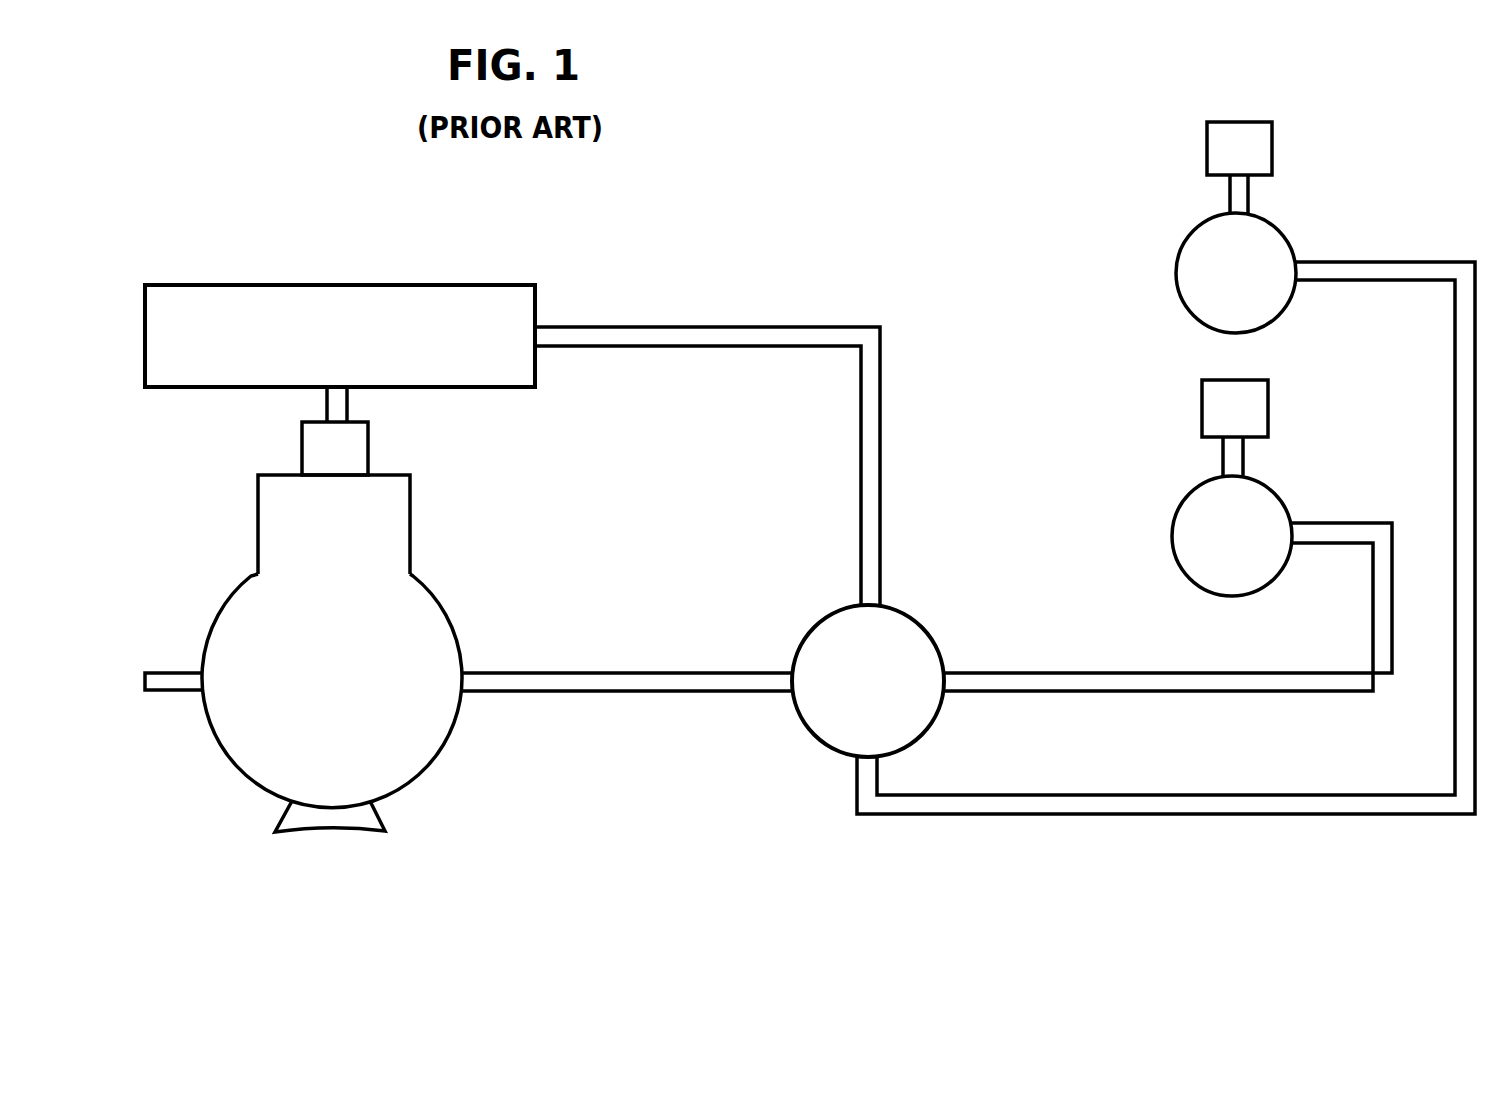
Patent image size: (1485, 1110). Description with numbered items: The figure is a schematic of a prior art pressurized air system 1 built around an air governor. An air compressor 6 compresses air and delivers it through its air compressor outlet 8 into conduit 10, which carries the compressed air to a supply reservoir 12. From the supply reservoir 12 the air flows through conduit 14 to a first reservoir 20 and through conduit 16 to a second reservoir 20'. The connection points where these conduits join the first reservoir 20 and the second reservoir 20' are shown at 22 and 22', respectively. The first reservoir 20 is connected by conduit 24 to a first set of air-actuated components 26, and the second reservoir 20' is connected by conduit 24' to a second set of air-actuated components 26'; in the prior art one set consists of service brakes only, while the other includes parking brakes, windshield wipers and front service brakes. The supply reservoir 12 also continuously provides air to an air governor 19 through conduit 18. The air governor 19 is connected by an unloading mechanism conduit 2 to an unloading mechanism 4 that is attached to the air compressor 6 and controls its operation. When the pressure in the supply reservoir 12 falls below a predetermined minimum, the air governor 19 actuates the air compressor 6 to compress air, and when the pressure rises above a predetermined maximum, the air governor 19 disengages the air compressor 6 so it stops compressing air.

The pressurized air system 1 is at (212, 200).
The unloading mechanism conduit 2 is at (323, 398).
The unloading mechanism 4 is at (302, 442).
The air compressor 6 is at (218, 617).
The air compressor outlet 8 is at (464, 670).
The conduit 10 is at (621, 671).
The supply reservoir 12 is at (801, 728).
The conduit 14 is at (1022, 817).
The conduit 16 is at (1042, 671).
The conduit 18 is at (758, 326).
The air governor 19 is at (407, 284).
The first reservoir 20 is at (1191, 273).
The first reservoir inlet port 22 is at (1332, 235).
The conduit 24 is at (1184, 190).
The first set of air-actuated components 26 is at (1196, 141).
The second reservoir 20' is at (1182, 535).
The second reservoir inlet port 22' is at (1333, 505).
The conduit 24' is at (1292, 446).
The second set of air-actuated components 26' is at (1277, 396).